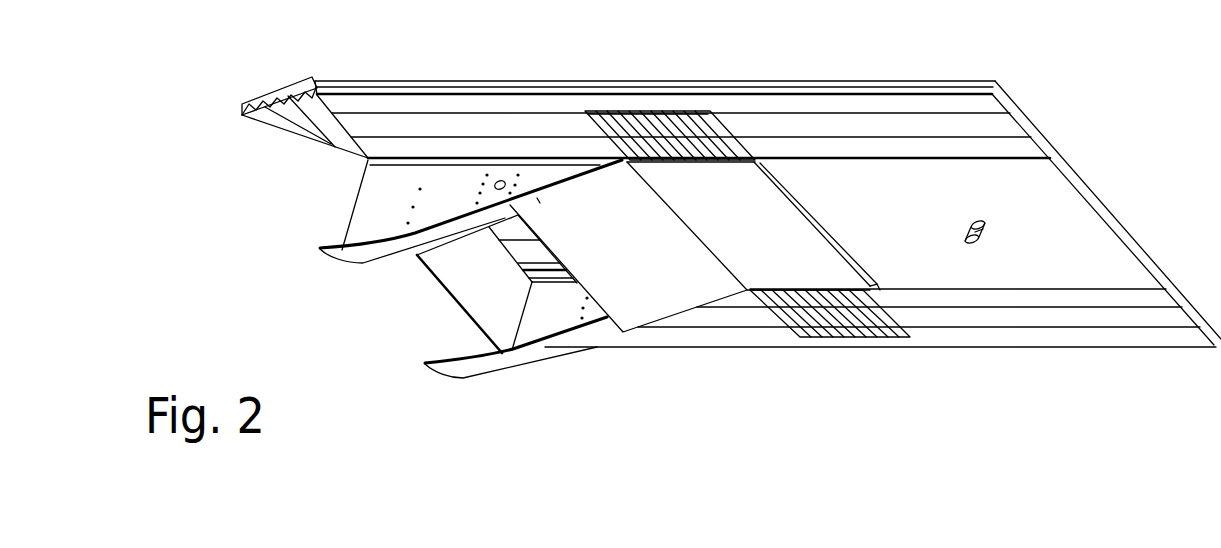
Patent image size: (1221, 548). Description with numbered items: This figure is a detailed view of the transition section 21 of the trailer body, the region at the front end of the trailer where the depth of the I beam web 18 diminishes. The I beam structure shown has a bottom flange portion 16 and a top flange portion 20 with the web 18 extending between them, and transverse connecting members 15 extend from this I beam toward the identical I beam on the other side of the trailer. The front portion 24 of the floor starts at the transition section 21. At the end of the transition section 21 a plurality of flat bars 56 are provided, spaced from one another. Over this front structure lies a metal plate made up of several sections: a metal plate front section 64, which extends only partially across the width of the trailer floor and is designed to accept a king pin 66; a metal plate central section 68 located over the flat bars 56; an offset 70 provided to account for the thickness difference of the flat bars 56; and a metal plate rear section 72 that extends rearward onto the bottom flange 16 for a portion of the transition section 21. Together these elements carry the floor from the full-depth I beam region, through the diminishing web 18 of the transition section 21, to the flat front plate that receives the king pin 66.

The front portion of the floor 24 is at (636, 56).
The top flange portion 20 is at (368, 162).
The web 18 is at (397, 215).
The bottom flange portion 16 is at (345, 253).
The transverse connecting members 15 is at (494, 285).
The transition section 21 is at (573, 372).
The metal plate rear section 72 is at (645, 263).
The metal plate central section 68 is at (768, 246).
The offset 70 is at (873, 285).
The flat bars 56 is at (797, 323).
The metal plate front section 64 is at (912, 231).
The king pin 66 is at (988, 222).